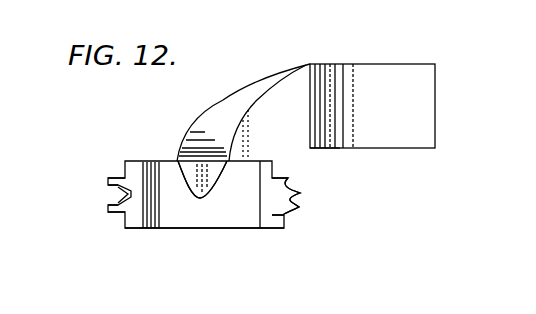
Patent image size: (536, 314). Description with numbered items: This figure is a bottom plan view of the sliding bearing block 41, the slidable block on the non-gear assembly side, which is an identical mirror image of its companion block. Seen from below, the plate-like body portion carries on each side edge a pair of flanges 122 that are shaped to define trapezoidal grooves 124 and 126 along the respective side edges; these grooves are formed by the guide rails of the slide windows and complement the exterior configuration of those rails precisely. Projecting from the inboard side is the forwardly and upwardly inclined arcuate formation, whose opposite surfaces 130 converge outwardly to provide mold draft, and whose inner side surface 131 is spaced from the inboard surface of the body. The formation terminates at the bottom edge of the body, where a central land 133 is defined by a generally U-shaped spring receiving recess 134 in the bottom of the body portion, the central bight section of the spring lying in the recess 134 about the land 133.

The sliding bearing block 41 is at (146, 146).
The flanges 122 is at (108, 180).
The trapezoidal groove 124 is at (122, 193).
The trapezoidal groove 126 is at (293, 200).
The opposite surfaces of the formation 130 is at (400, 115).
The inner side surface 131 is at (323, 150).
The central land 133 is at (200, 192).
The spring receiving recess 134 is at (177, 212).